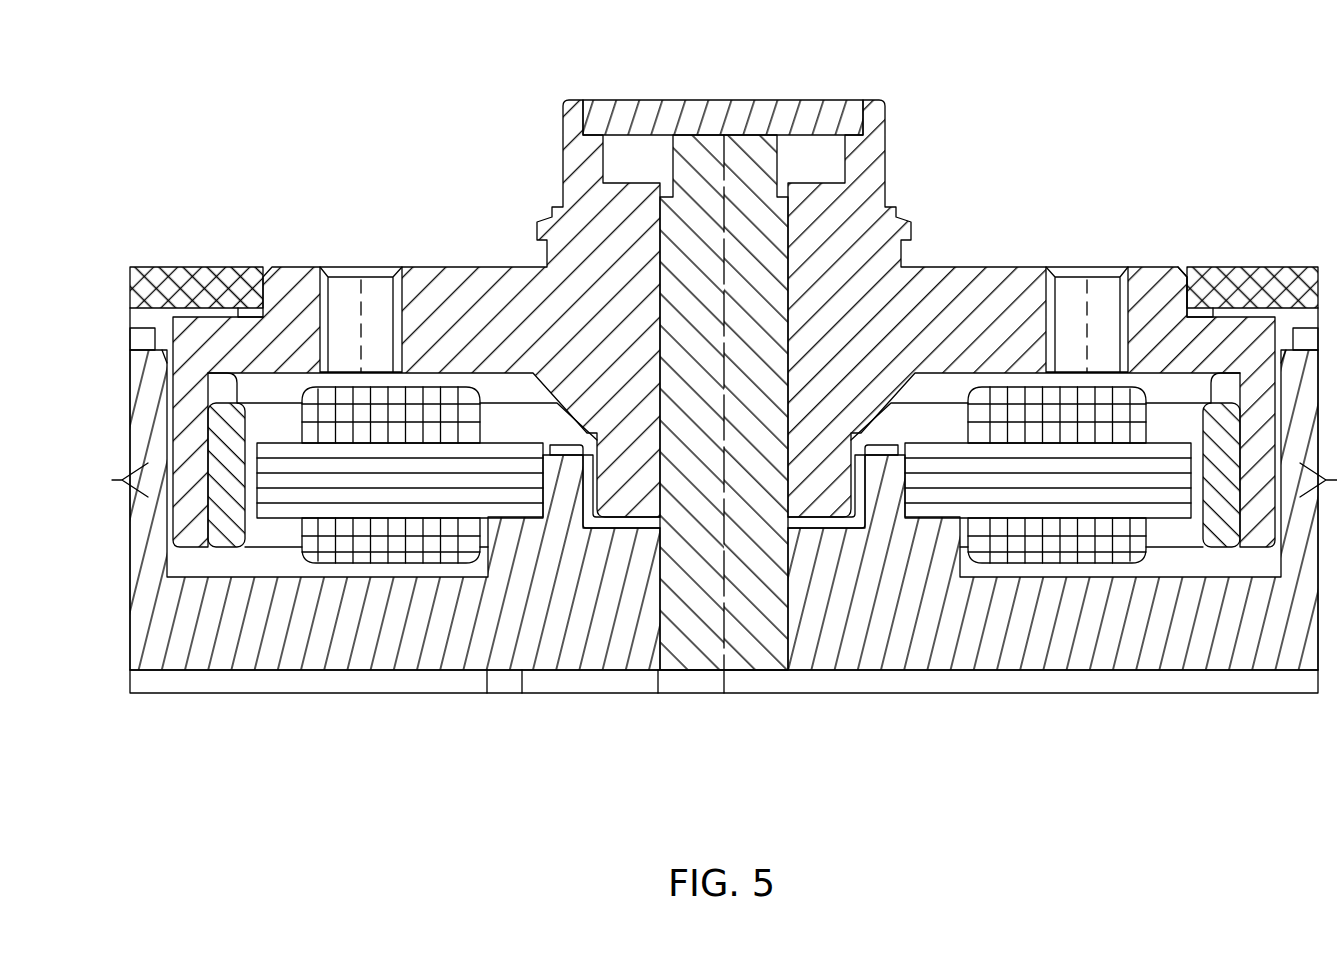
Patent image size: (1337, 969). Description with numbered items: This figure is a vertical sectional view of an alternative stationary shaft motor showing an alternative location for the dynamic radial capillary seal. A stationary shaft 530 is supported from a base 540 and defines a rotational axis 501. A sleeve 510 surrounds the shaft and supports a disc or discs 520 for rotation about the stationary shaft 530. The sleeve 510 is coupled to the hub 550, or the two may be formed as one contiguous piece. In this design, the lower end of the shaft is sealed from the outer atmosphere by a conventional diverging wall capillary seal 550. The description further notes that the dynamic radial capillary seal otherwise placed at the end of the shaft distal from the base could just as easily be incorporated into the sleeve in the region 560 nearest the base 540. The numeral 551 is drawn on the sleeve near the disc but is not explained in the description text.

The shaft 501 is at (720, 175).
The rotor body 510 is at (978, 295).
The cap 520 is at (1260, 282).
The hub cap 530 is at (745, 118).
The housing 540 is at (1025, 650).
The sleeve 550 is at (667, 513).
The boss 551 is at (1152, 283).
The sleeve 560 is at (818, 497).